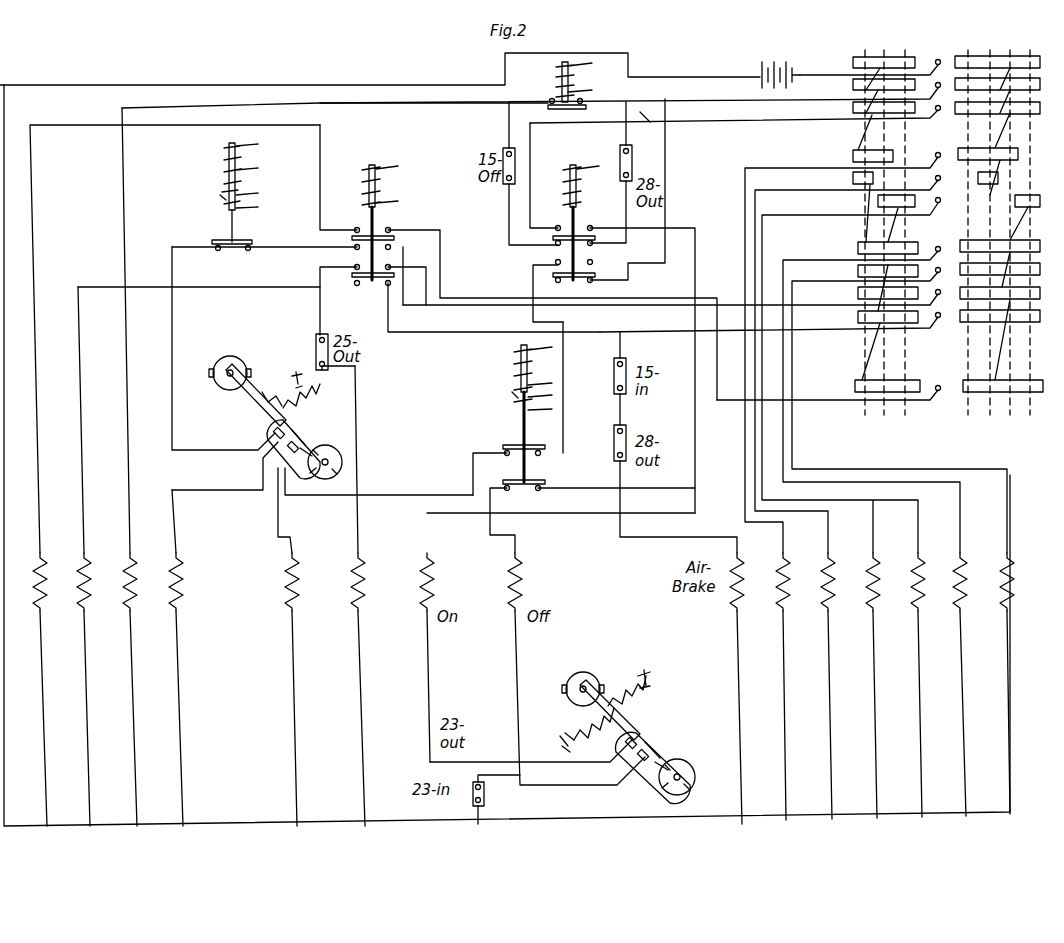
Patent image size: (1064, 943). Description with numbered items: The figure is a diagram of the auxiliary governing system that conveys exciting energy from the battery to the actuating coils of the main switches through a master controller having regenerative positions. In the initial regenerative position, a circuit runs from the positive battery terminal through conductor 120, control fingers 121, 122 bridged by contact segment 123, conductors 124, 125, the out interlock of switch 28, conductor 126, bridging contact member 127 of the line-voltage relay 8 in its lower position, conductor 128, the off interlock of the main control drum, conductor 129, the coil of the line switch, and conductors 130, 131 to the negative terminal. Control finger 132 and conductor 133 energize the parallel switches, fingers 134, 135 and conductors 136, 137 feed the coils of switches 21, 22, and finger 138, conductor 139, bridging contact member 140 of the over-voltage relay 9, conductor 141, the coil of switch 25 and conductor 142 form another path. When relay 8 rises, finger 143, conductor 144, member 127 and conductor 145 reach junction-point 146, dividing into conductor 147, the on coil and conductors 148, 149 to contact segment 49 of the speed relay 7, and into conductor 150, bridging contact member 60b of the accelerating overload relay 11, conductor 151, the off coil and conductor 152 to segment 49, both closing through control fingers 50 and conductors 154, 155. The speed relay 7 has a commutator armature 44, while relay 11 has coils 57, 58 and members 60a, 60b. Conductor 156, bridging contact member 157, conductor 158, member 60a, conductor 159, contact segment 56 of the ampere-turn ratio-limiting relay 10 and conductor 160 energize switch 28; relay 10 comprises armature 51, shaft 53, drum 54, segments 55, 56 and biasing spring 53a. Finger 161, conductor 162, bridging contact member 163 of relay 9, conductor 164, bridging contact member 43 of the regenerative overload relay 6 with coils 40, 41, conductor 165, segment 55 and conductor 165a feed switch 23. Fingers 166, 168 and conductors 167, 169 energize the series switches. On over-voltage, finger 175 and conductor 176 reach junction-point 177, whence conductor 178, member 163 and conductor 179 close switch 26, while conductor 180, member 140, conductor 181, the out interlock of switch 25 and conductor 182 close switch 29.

The regenerative overload relay 6 is at (232, 207).
The speed relay 7 is at (639, 743).
The line-voltage relay 8 is at (570, 224).
The over-voltage relay 9 is at (380, 234).
The ampere-turn ratio-limiting relay 10 is at (288, 412).
The accelerating overload relay 11 is at (530, 427).
The switch 21 is at (972, 684).
The switch 22 is at (1020, 683).
The switch 23 is at (188, 658).
The switch 25 is at (94, 556).
The switch 26 is at (175, 475).
The switch 28 is at (301, 647).
The switch 29 is at (369, 596).
The actuating coil 40 is at (225, 198).
The actuating coil 41 is at (224, 152).
The bridging contact member 43 is at (232, 250).
The armature 44 is at (576, 695).
The contact segment 49 is at (655, 745).
The control fingers 50 is at (655, 768).
The armature 51 is at (222, 362).
The operating shaft 53 is at (262, 400).
The spring 53a is at (284, 404).
The drum 54 is at (343, 460).
The contact segment 55 is at (310, 428).
The contact segment 56 is at (310, 448).
The actuating coil 57 is at (521, 398).
The actuating coil 58 is at (516, 367).
The bridging contact member 60a is at (538, 457).
The bridging contact member 60b is at (525, 490).
The conductor 120 is at (826, 82).
The control finger 121 is at (939, 51).
The control finger 122 is at (944, 77).
The contact segment 123 is at (846, 132).
The conductor 124 is at (740, 100).
The conductor 125 is at (636, 113).
The conductor 126 is at (578, 205).
The bridging contact member 127 is at (604, 246).
The conductor 128 is at (516, 225).
The conductor 129 is at (474, 104).
The conductor 130 is at (136, 718).
The conductor 131 is at (338, 86).
The control finger 132 is at (954, 192).
The conductor 133 is at (812, 218).
The control finger 134 is at (944, 240).
The control finger 135 is at (954, 262).
The conductor 136 is at (828, 263).
The conductor 137 is at (828, 284).
The control finger 138 is at (954, 308).
The conductor 139 is at (832, 328).
The bridging contact member 140 is at (370, 283).
The conductor 141 is at (270, 288).
The conductor 142 is at (90, 718).
The control finger 143 is at (944, 101).
The conductor 144 is at (811, 121).
The conductor 145 is at (705, 220).
The junction-point 146 is at (697, 484).
The conductor 147 is at (685, 518).
The conductor 148 is at (428, 663).
The conductor 149 is at (430, 762).
The conductor 150 is at (678, 488).
The conductor 151 is at (512, 533).
The conductor 152 is at (520, 660).
The conductor 154 is at (484, 790).
The conductor 155 is at (478, 811).
The conductor 156 is at (665, 152).
The bridging contact member 157 is at (592, 267).
The conductor 158 is at (533, 280).
The conductor 159 is at (473, 480).
The conductor 160 is at (284, 515).
The control finger 161 is at (954, 284).
The conductor 162 is at (828, 304).
The bridging contact member 163 is at (394, 276).
The conductor 164 is at (316, 250).
The conductor 165 is at (172, 267).
The conductor 165a is at (235, 493).
The control finger 166 is at (924, 147).
The conductor 167 is at (808, 172).
The control finger 168 is at (954, 171).
The conductor 169 is at (811, 194).
The control finger 175 is at (944, 378).
The conductor 176 is at (828, 403).
The junction-point 177 is at (494, 308).
The conductor 178 is at (442, 266).
The conductor 179 is at (320, 152).
The conductor 180 is at (415, 270).
The conductor 181 is at (320, 306).
The conductor 182 is at (355, 422).